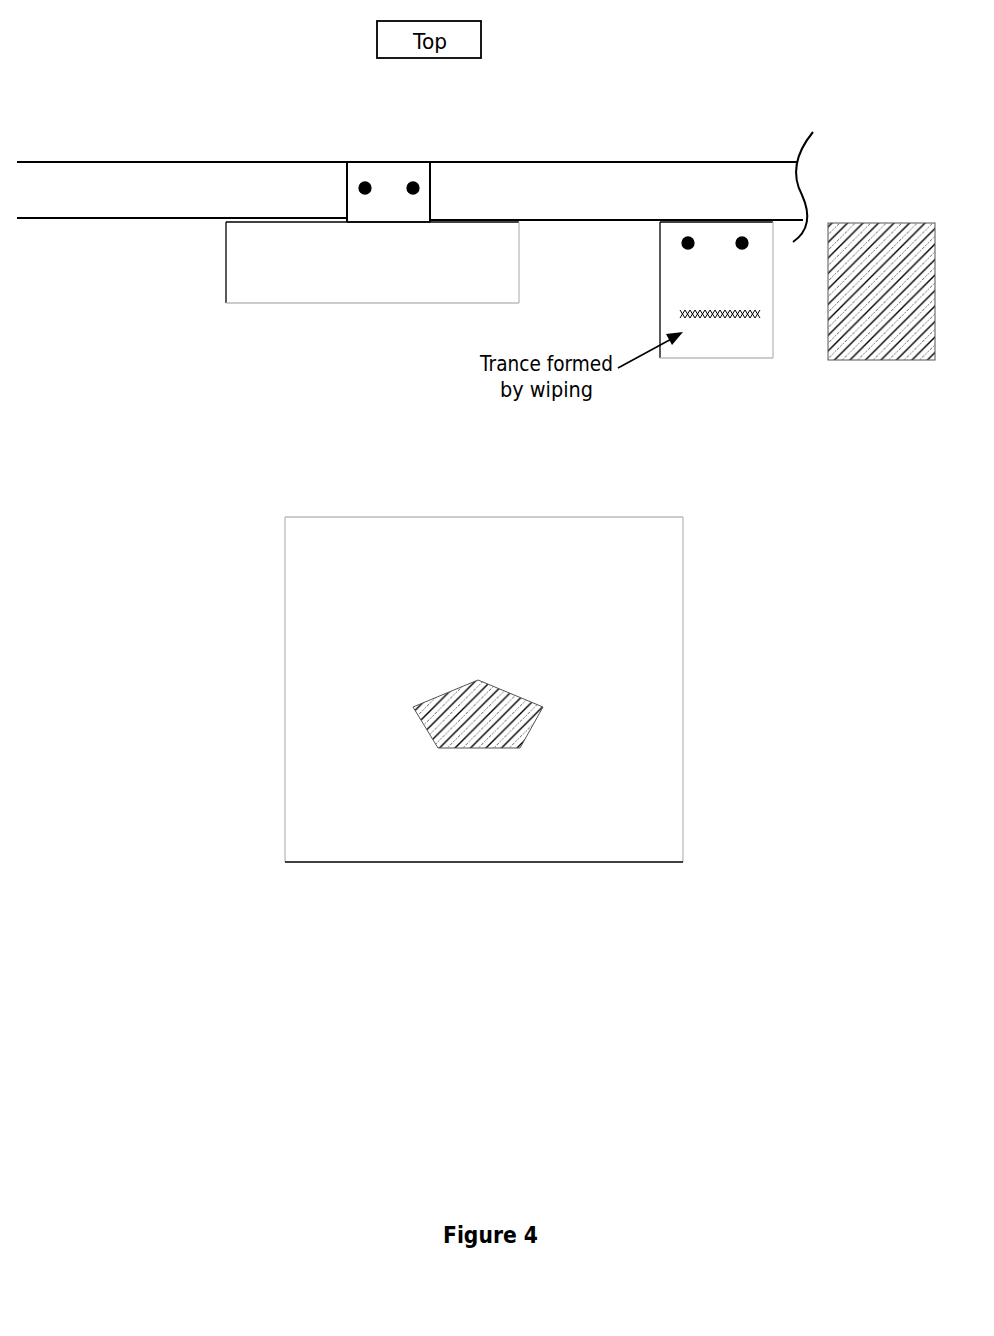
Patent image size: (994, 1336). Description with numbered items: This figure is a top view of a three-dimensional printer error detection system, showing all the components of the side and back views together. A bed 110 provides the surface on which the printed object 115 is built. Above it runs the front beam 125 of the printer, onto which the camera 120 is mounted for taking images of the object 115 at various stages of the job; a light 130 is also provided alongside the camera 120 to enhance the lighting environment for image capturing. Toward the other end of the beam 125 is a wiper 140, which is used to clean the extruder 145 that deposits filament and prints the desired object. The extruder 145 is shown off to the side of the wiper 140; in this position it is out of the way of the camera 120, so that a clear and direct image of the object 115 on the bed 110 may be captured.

The bed 110 is at (458, 883).
The 3D object 115 is at (487, 756).
The camera 120 is at (298, 305).
The beam 125 is at (415, 178).
The light 130 is at (207, 296).
The wiper 140 is at (679, 290).
The extruder 145 is at (881, 326).